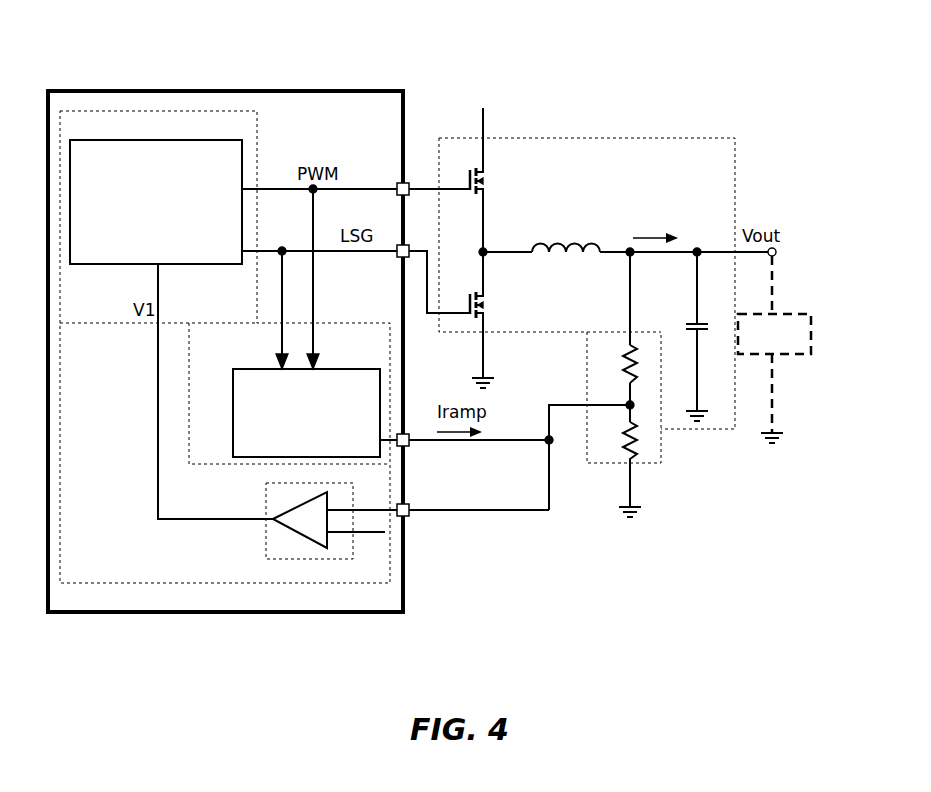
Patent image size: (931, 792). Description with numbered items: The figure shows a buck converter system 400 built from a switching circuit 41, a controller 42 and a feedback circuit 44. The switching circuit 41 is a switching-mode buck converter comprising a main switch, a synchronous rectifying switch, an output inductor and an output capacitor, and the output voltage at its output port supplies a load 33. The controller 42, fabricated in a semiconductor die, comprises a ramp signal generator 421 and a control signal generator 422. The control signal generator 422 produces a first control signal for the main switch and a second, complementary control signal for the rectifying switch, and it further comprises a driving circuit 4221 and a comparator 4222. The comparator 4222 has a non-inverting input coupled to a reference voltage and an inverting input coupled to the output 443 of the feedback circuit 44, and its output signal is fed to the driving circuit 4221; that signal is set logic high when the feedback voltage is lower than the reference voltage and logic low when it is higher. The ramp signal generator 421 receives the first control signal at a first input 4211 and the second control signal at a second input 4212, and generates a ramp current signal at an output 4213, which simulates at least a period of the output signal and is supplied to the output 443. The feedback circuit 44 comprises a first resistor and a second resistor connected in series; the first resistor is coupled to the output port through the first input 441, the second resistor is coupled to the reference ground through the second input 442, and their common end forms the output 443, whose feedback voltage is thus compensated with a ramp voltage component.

The buck converter system 400 is at (738, 58).
The switching circuit 41 is at (735, 138).
The controller 42 is at (403, 612).
The load 33 is at (811, 312).
The feedback circuit 44 is at (563, 398).
The ramp signal generator 421 is at (380, 383).
The control signal generator 422 is at (145, 583).
The first input 441 is at (630, 332).
The second input 442 is at (628, 466).
The output 443 is at (576, 405).
The first input 4211 is at (276, 366).
The second input 4212 is at (320, 355).
The output 4213 is at (386, 445).
The driving circuit 4221 is at (142, 140).
The comparator 4222 is at (266, 559).